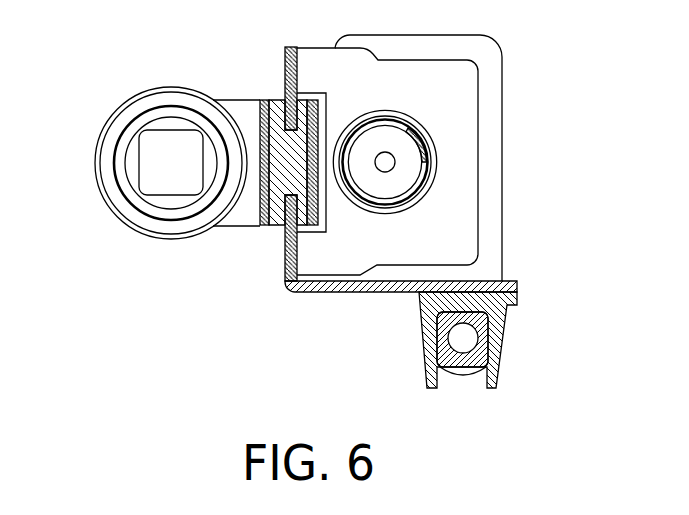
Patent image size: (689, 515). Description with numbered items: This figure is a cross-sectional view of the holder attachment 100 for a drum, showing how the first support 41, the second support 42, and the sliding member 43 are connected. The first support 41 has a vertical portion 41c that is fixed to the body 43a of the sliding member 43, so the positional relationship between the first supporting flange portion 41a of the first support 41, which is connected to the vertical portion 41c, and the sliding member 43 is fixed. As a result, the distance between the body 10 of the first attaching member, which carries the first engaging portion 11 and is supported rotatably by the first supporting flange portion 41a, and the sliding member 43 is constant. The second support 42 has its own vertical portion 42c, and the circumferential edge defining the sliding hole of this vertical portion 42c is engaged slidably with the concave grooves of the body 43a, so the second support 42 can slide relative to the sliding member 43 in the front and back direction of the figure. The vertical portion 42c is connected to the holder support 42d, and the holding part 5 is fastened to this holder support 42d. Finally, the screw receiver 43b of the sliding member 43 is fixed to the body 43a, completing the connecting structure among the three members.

The holder attachment 100 is at (528, 192).
The body 10 is at (130, 140).
The first engaging portion 11 is at (147, 186).
The first support 41 is at (355, 183).
The first supporting flange portion 41a is at (237, 219).
The vertical portion 41c is at (313, 108).
The second support 42 is at (316, 207).
The vertical portion 42c is at (290, 60).
The holder support 42d is at (358, 293).
The sliding member 43 is at (228, 176).
The body 43a is at (276, 100).
The screw receiver 43b is at (265, 219).
The holding part 5 is at (505, 318).